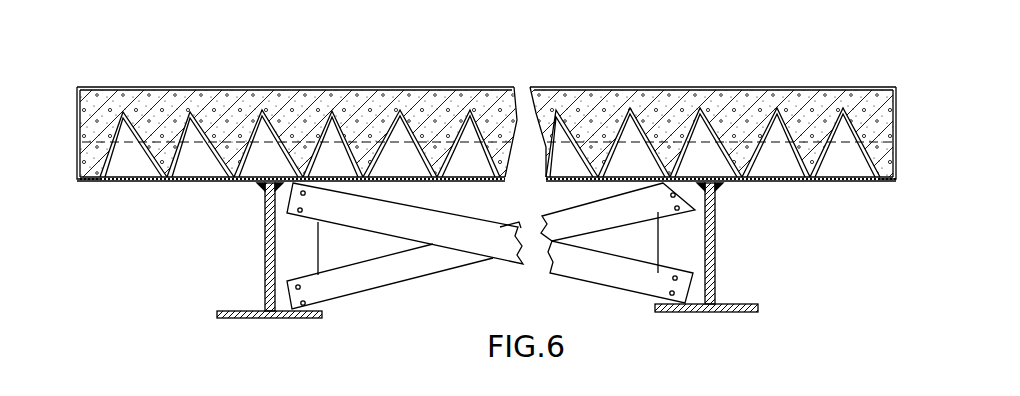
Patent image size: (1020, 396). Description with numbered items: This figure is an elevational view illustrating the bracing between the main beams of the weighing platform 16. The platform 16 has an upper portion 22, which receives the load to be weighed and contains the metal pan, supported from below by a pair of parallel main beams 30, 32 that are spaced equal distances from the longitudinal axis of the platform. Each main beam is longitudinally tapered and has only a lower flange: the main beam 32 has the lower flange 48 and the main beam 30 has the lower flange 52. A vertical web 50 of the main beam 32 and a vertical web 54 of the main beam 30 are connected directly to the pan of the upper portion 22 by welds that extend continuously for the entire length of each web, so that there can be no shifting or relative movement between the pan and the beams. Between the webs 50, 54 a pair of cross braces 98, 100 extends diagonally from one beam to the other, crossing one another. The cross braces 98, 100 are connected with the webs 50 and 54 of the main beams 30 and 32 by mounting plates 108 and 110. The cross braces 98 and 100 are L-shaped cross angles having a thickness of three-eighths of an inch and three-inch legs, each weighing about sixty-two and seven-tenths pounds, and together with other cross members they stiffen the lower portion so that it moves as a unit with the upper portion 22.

The platform 16 is at (842, 82).
The upper portion 22 is at (898, 138).
The main beam 30 is at (249, 273).
The main beam 32 is at (723, 262).
The lower flange 48 is at (748, 308).
The vertical web 50 is at (712, 208).
The lower flange 52 is at (262, 318).
The vertical web 54 is at (267, 216).
The cross brace 98 is at (435, 258).
The cross brace 100 is at (405, 225).
The mounting plate 108 is at (303, 248).
The mounting plate 110 is at (673, 243).